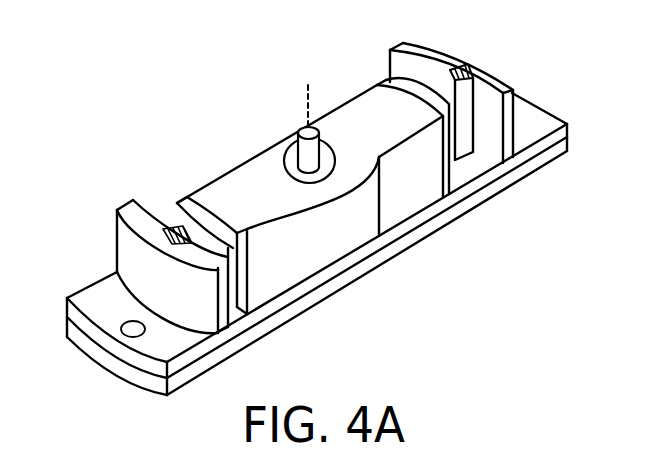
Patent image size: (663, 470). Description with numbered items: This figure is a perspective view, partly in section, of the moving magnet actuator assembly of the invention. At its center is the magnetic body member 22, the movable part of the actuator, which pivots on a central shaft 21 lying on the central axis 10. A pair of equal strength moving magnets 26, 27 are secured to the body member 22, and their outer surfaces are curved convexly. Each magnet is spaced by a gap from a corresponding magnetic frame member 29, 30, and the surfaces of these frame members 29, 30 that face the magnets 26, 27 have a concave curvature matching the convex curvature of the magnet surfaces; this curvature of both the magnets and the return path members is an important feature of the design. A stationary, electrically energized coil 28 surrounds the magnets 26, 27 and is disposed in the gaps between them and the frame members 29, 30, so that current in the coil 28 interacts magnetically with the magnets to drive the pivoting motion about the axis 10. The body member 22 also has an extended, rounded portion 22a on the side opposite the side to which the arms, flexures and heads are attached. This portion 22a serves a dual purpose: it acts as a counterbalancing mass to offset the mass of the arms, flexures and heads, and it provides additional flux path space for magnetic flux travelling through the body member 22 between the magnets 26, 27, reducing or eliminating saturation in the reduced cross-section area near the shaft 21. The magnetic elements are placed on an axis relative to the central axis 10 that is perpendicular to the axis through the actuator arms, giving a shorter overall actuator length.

The axis 10 is at (307, 84).
The central shaft 21 is at (305, 130).
The magnetic body member 22 is at (324, 199).
The extended rounded portion 22a is at (325, 186).
The magnet 26 is at (382, 83).
The magnet 27 is at (182, 207).
The coil 28 is at (165, 230).
The magnetic frame member 29 is at (124, 206).
The magnetic frame member 30 is at (410, 45).